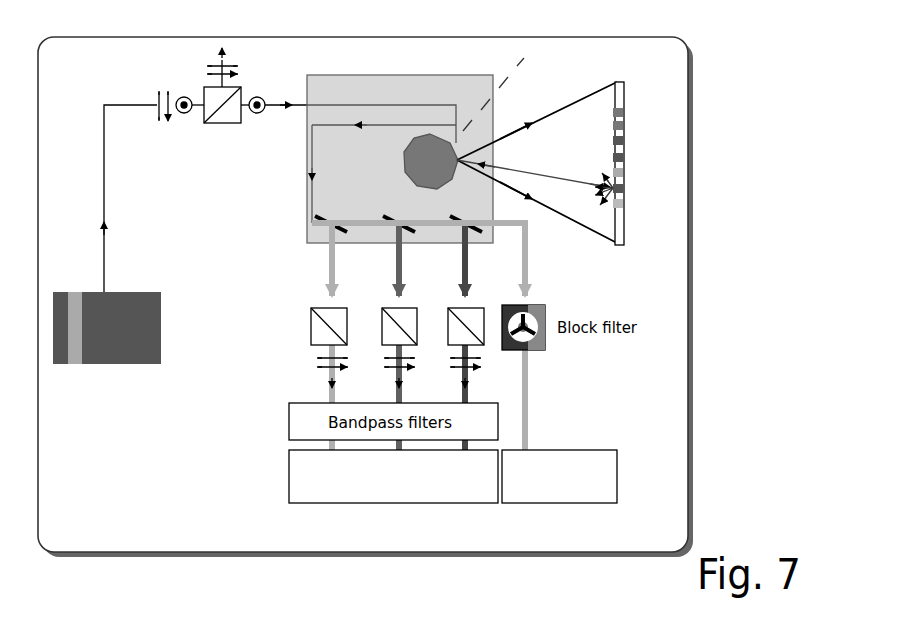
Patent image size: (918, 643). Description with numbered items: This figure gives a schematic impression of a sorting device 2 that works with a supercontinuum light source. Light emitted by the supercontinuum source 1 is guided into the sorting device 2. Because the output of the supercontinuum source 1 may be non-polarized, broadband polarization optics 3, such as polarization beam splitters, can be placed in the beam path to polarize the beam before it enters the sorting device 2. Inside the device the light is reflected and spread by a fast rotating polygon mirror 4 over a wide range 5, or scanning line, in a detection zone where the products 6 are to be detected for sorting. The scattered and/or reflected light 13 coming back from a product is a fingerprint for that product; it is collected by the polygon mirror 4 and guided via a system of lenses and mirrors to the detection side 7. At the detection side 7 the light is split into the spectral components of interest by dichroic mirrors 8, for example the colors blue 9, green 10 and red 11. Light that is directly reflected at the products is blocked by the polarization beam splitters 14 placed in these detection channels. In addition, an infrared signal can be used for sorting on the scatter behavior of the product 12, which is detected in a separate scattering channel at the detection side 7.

The supercontinuum source 1 is at (138, 366).
The sorting device 2 is at (328, 93).
The broadband polarization optics 3 is at (203, 87).
The polygon mirror 4 is at (412, 158).
The wide range 5 is at (621, 92).
The products 6 is at (623, 208).
The detection side 7 is at (517, 505).
The dichroic mirrors 8 is at (312, 218).
The blue spectral component 9 is at (329, 299).
The green spectral component 10 is at (396, 300).
The red spectral component 11 is at (462, 300).
The scatter behavior of the product 12 is at (438, 336).
The scattered and/or reflected light 13 is at (604, 210).
The polarization beam splitters 14 is at (319, 341).